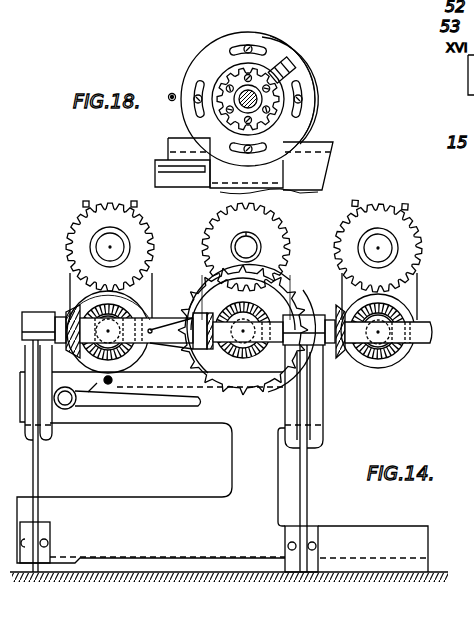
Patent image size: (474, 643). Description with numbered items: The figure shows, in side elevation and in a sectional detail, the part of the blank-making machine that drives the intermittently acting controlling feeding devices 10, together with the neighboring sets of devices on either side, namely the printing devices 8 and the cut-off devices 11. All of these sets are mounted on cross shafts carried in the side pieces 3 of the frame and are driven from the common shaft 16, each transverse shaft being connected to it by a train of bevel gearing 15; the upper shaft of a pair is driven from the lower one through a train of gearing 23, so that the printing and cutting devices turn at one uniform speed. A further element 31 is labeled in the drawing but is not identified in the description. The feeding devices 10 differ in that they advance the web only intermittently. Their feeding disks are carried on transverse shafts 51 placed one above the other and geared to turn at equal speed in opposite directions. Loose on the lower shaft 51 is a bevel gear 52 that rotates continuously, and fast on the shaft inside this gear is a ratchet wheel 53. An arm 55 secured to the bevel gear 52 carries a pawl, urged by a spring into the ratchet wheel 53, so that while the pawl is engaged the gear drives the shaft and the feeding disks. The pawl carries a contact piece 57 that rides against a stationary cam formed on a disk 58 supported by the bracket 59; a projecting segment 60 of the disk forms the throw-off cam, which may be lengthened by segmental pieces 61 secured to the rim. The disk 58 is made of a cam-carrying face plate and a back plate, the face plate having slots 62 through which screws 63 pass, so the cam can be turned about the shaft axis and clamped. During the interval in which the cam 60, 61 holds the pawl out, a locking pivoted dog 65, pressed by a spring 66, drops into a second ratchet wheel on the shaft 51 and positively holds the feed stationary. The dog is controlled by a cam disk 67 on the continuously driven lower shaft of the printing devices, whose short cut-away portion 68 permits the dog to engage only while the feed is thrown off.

In FIG. 18, the side pieces 3 is at (313, 167).
In FIG. 14, the side pieces 3 is at (237, 466).
In FIG. 14, the printing devices 8 is at (111, 248).
In FIG. 14, the controlling feeding devices 10 is at (233, 260).
In FIG. 14, the cut-off devices 11 is at (379, 250).
In FIG. 14, the bevel gearing 15 is at (78, 320).
In FIG. 14, the common shaft 16 is at (165, 325).
In FIG. 14, the train of gearing 23 is at (68, 238).
In FIG. 14, the shaft 31 is at (243, 318).
In FIG. 18, the transverse shafts 51 is at (240, 90).
In FIG. 14, the transverse shafts 51 is at (238, 247).
In FIG. 14, the bevel gear 52 is at (243, 350).
In FIG. 14, the ratchet wheel 53 is at (222, 390).
In FIG. 14, the arm 55 is at (171, 340).
In FIG. 18, the contact piece 57 is at (171, 100).
In FIG. 18, the disk 58 is at (200, 62).
In FIG. 18, the bracket 59 is at (243, 166).
In FIG. 14, the bracket 59 is at (322, 355).
In FIG. 18, the projecting segment 60 is at (292, 60).
In FIG. 14, the projecting segment 60 is at (287, 287).
In FIG. 18, the segmental pieces 61 is at (315, 78).
In FIG. 14, the segmental pieces 61 is at (300, 305).
In FIG. 18, the slots 62 is at (270, 54).
In FIG. 18, the screws 63 is at (248, 46).
In FIG. 18, the locking pivoted dog 65 is at (158, 170).
In FIG. 14, the locking pivoted dog 65 is at (128, 405).
In FIG. 18, the spring 66 is at (151, 10).
In FIG. 14, the cam disk 67 is at (72, 312).
In FIG. 14, the cut-away portion 68 is at (130, 286).